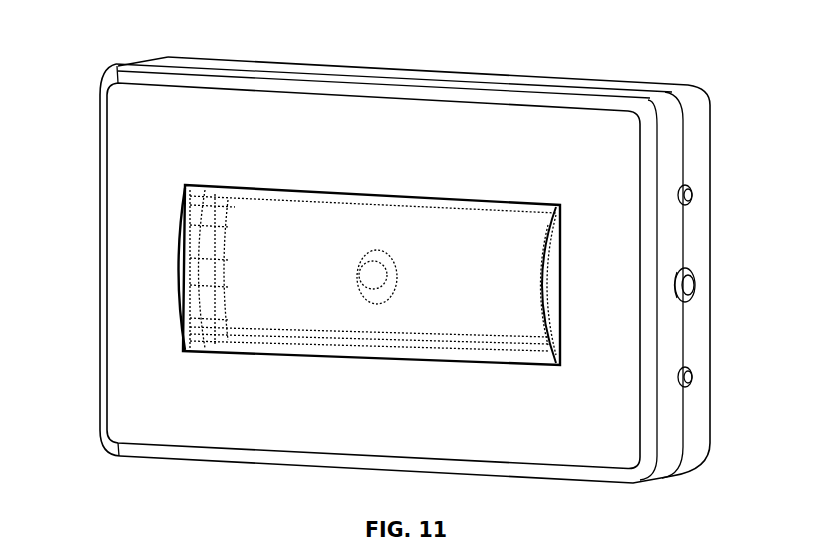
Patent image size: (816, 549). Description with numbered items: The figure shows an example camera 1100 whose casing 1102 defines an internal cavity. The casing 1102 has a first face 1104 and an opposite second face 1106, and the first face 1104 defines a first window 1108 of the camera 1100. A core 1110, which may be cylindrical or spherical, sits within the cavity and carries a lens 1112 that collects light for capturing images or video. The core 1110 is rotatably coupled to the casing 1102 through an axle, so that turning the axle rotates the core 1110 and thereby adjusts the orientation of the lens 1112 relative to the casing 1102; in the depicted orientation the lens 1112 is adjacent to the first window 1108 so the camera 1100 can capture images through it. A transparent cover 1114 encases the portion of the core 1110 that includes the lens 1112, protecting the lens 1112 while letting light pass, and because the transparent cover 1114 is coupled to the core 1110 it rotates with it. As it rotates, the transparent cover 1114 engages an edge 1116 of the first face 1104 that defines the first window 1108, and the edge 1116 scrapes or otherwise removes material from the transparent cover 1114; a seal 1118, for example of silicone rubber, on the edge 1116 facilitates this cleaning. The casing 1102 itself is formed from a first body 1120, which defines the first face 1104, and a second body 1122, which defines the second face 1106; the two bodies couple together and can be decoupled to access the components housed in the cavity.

The camera 1100 is at (633, 55).
The casing 1102 is at (693, 103).
The first face 1104 is at (177, 427).
The second face 1106 is at (521, 67).
The first window 1108 is at (308, 165).
The core 1110 is at (242, 244).
The lens 1112 is at (372, 272).
The transparent cover 1114 is at (262, 345).
The edge 1116 is at (365, 195).
The seal 1118 is at (212, 185).
The first body 1120 is at (668, 418).
The second body 1122 is at (693, 402).